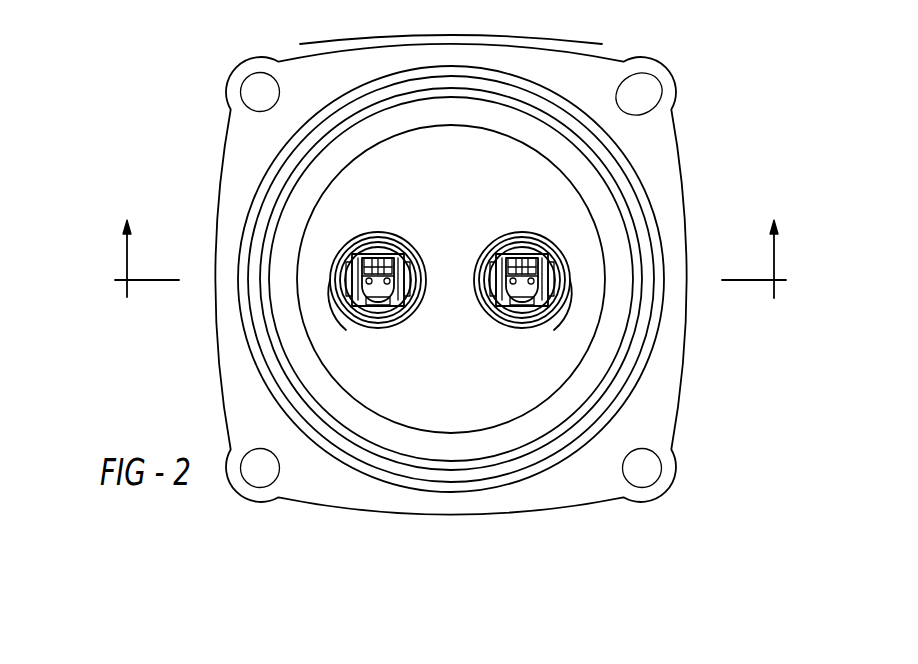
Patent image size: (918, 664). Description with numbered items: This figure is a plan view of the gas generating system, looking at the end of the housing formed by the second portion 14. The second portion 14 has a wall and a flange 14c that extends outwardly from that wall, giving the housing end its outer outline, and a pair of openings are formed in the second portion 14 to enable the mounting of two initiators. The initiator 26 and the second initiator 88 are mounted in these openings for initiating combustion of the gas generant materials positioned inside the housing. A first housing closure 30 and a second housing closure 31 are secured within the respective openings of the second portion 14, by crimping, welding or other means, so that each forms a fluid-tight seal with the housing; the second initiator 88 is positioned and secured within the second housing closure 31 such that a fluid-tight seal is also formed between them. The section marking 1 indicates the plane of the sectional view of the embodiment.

The section line 1- 1 is at (450, 241).
The second portion 14 is at (283, 185).
The flange 14c is at (648, 150).
The initiator 26 is at (375, 267).
The second initiator 88 is at (515, 268).
The first housing closure 30 is at (342, 302).
The second housing closure 31 is at (557, 297).